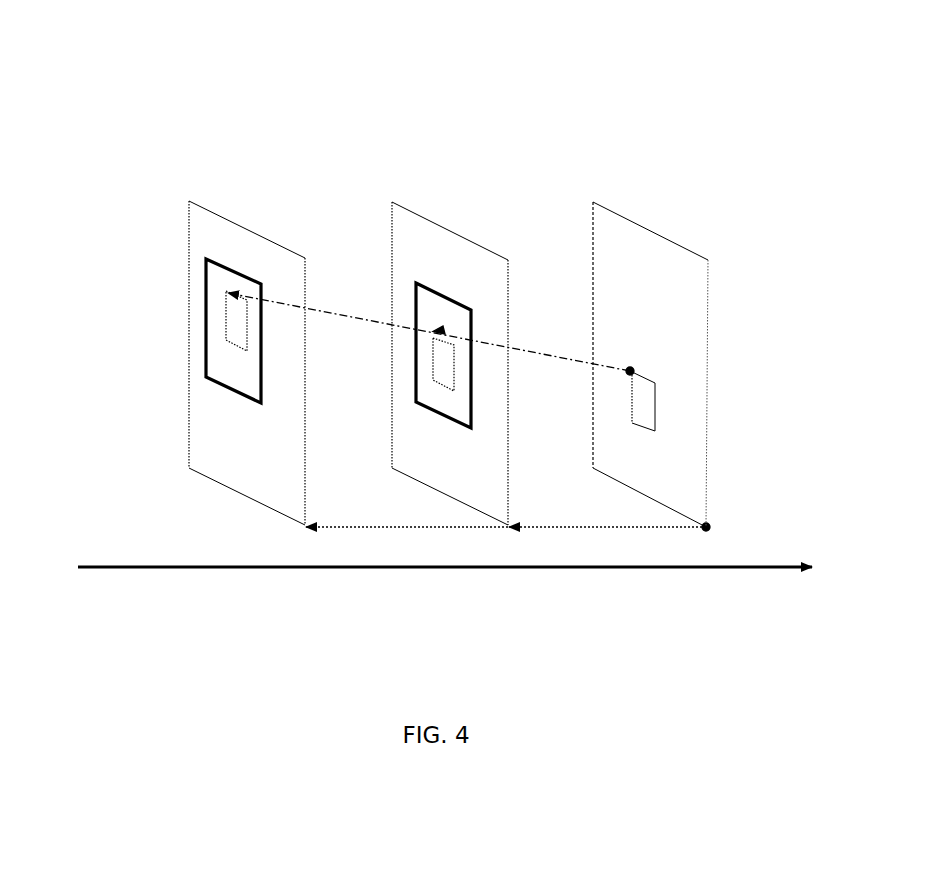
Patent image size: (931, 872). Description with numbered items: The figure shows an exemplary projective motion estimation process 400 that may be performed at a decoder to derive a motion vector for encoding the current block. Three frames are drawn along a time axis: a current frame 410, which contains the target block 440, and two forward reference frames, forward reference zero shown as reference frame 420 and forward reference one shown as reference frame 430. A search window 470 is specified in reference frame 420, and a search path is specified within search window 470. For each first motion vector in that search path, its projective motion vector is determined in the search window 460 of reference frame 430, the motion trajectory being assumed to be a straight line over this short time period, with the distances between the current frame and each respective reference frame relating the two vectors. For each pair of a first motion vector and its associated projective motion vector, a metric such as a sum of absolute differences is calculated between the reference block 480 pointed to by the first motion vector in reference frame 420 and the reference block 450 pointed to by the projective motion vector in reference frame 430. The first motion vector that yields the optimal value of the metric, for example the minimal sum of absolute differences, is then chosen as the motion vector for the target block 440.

The projective ME process 400 is at (656, 95).
The current frame 410 is at (672, 240).
The reference frame 420 is at (477, 247).
The reference frame 430 is at (267, 247).
The target block 440 is at (653, 372).
The reference block 450 is at (217, 323).
The search window 460 is at (222, 403).
The search window 470 is at (477, 382).
The reference block 480 is at (438, 365).